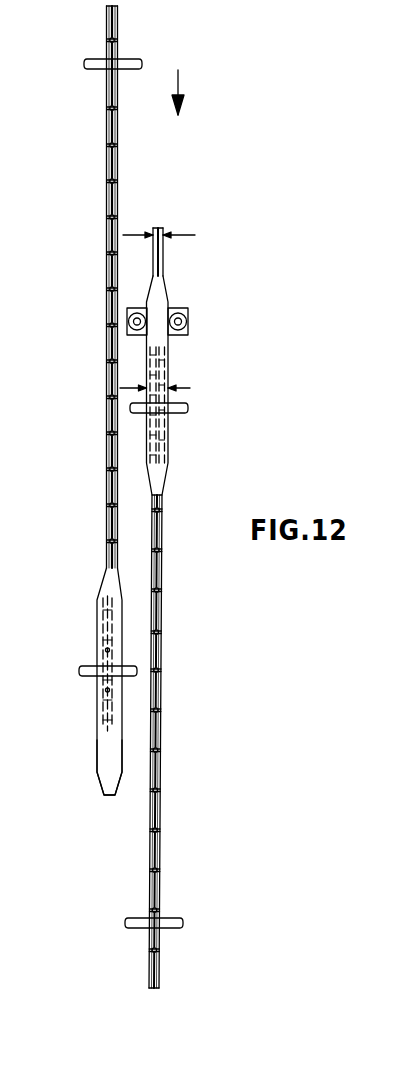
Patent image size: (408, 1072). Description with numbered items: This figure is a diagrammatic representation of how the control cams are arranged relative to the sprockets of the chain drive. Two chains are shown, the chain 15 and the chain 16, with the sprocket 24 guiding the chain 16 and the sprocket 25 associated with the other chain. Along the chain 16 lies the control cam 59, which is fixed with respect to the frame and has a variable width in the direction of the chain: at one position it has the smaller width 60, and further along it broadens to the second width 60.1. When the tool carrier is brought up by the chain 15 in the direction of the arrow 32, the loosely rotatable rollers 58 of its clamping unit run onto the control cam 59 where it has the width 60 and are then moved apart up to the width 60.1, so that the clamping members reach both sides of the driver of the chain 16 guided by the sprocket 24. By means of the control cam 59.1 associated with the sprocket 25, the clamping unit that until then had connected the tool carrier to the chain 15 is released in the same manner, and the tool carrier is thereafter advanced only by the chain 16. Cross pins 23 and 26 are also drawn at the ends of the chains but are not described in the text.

The chain 15 is at (90, 190).
The chain 16 is at (160, 808).
The cross pin 23 is at (106, 46).
The sprocket 24 is at (181, 410).
The sprocket 25 is at (100, 638).
The cross pin 26 is at (160, 913).
The arrow 32 is at (178, 80).
The rollers 58 is at (135, 310).
The control cam 59 is at (162, 340).
The control cam 59.1 is at (105, 750).
The width 60 is at (162, 230).
The width 60.1 is at (172, 378).